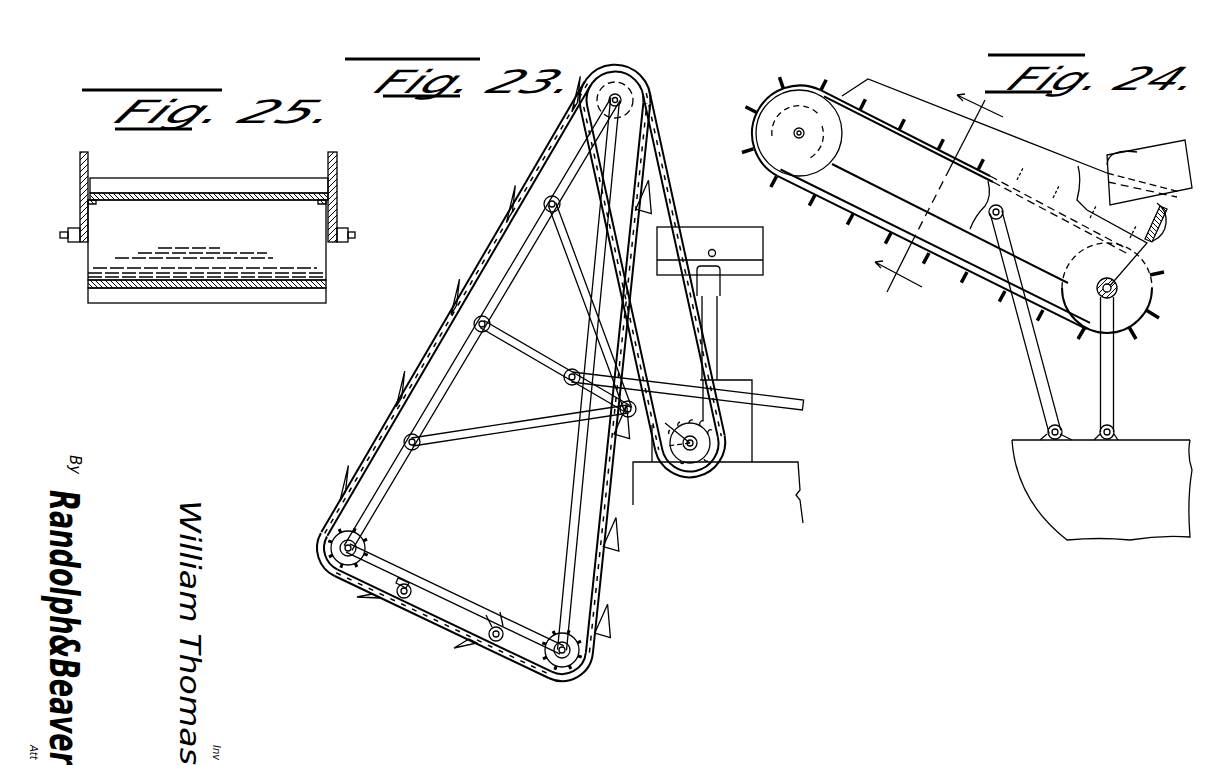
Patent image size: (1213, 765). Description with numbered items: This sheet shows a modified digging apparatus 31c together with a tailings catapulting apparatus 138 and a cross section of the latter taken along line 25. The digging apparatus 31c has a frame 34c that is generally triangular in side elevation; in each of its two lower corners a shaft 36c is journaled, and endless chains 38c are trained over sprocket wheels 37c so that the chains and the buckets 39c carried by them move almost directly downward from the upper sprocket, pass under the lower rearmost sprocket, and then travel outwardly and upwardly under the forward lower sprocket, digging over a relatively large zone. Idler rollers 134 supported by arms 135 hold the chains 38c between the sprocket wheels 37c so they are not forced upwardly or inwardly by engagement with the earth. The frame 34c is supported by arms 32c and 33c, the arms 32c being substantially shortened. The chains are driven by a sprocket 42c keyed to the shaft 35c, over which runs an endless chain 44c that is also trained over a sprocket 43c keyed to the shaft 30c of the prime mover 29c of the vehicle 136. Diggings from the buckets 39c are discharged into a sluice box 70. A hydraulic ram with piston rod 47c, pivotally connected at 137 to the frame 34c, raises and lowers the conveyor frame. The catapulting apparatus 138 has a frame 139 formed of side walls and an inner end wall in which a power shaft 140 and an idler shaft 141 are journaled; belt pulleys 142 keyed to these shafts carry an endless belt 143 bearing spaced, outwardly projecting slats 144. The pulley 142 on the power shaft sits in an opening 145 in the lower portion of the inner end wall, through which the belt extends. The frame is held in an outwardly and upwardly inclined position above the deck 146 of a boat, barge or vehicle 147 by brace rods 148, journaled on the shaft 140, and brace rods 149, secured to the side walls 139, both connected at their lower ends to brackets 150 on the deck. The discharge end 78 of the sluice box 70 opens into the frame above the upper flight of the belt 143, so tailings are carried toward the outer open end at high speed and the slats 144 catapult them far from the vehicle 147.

In FIG. 25, the frame 139 is at (336, 188).
In FIG. 24, the frame 139 is at (1078, 145).
In FIG. 25, the idler shaft 141 is at (66, 242).
In FIG. 24, the idler shaft 141 is at (800, 128).
In FIG. 25, the belt pulley 142 is at (207, 240).
In FIG. 24, the belt pulley 142 is at (790, 165).
In FIG. 25, the endless belt 143 is at (134, 195).
In FIG. 25, the slat 144 is at (223, 186).
In FIG. 24, the slat 144 is at (812, 198).
In FIG. 23, the shaft 35c is at (613, 92).
In FIG. 23, the sprocket 42c is at (627, 86).
In FIG. 23, the modified digging apparatus 31c is at (666, 158).
In FIG. 23, the endless chain 38c is at (600, 600).
In FIG. 23, the frame 34c is at (438, 411).
In FIG. 23, the pivotal connection 137 is at (566, 370).
In FIG. 23, the arm 33c is at (537, 360).
In FIG. 23, the piston rod 47c is at (804, 405).
In FIG. 23, the shaft 30c is at (698, 443).
In FIG. 23, the sprocket 43c is at (703, 462).
In FIG. 23, the sluice box 70 is at (757, 280).
In FIG. 24, the sluice box 70 is at (1168, 138).
In FIG. 23, the endless chain 44c is at (715, 344).
In FIG. 23, the prime mover 29c is at (748, 378).
In FIG. 23, the vehicle 136 is at (803, 502).
In FIG. 23, the arm 32c is at (645, 422).
In FIG. 23, the shaft 36c is at (370, 540).
In FIG. 23, the sprocket wheel 37c is at (562, 664).
In FIG. 23, the bucket 39c is at (462, 652).
In FIG. 23, the arm 135 is at (410, 584).
In FIG. 23, the idler roller 134 is at (487, 612).
In FIG. 24, the section line 25 is at (952, 197).
In FIG. 24, the conveying and catapulting apparatus 138 is at (1053, 144).
In FIG. 24, the discharge end 78 is at (1116, 158).
In FIG. 24, the opening 145 is at (1145, 175).
In FIG. 24, the power shaft 140 is at (1100, 278).
In FIG. 24, the brace rod 149 is at (1037, 376).
In FIG. 24, the brace rod 148 is at (1114, 370).
In FIG. 24, the deck 146 is at (1148, 440).
In FIG. 24, the vehicle 147 is at (1015, 494).
In FIG. 24, the bracket 150 is at (1097, 438).